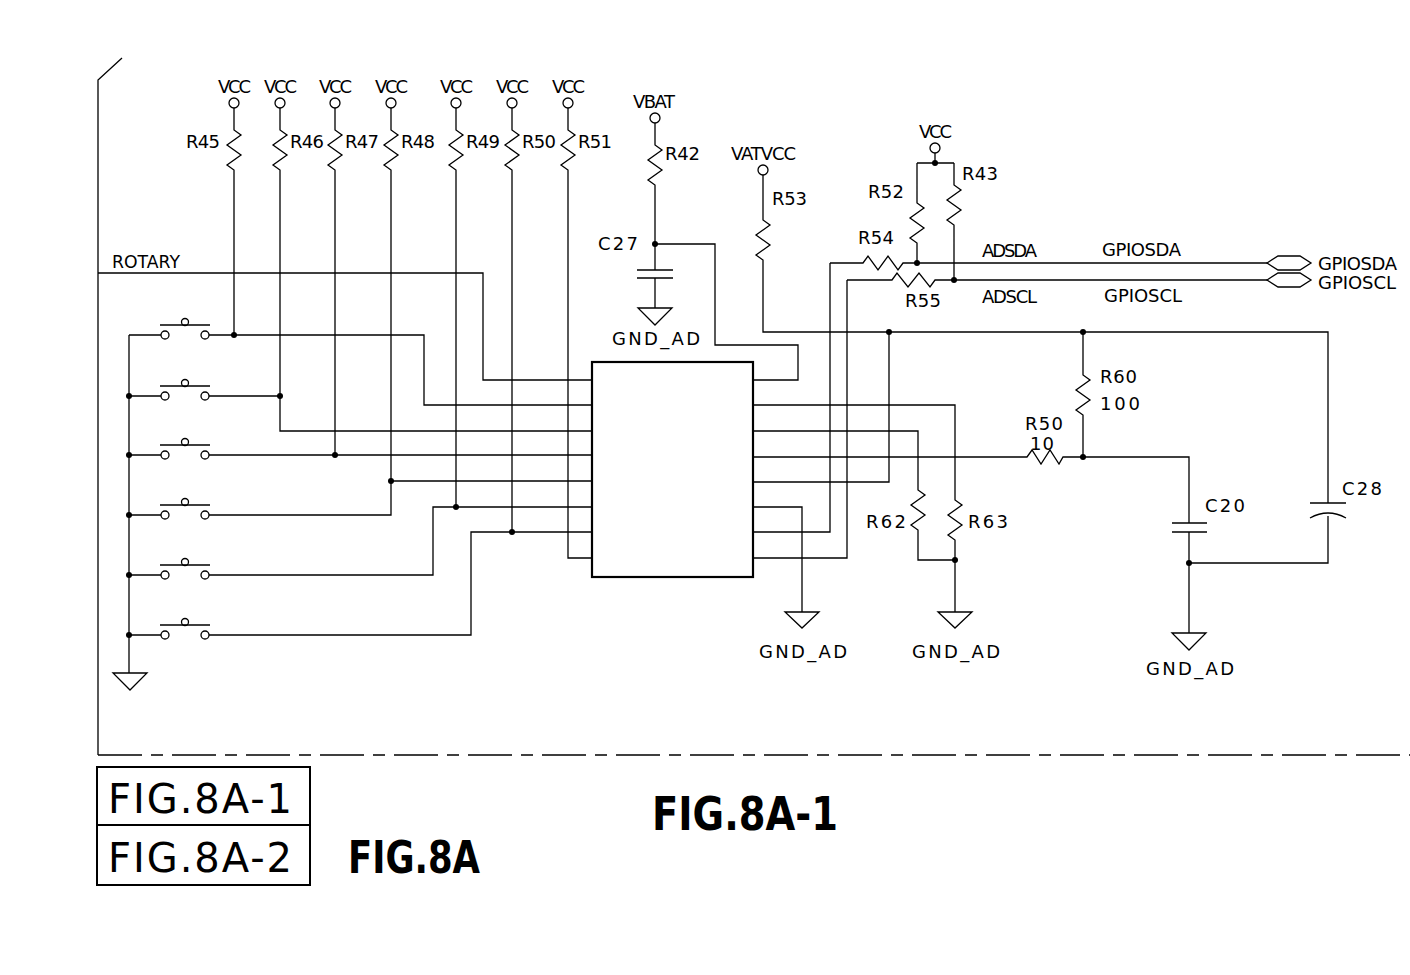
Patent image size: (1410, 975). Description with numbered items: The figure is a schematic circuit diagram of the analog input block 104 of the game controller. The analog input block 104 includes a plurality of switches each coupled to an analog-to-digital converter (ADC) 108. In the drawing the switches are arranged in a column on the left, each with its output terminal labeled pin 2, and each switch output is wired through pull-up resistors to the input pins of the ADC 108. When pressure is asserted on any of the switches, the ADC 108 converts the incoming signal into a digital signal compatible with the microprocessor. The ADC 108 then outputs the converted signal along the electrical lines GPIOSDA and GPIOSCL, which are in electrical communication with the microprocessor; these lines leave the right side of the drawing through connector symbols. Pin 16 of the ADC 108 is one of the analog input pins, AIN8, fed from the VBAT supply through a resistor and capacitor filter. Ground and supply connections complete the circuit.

The analog input buttons 104 is at (384, 510).
The analog-to-digital converter 108 is at (672, 577).
The switch output terminal 2 is at (360, 360).
The AIN8 input pin 16 is at (726, 313).